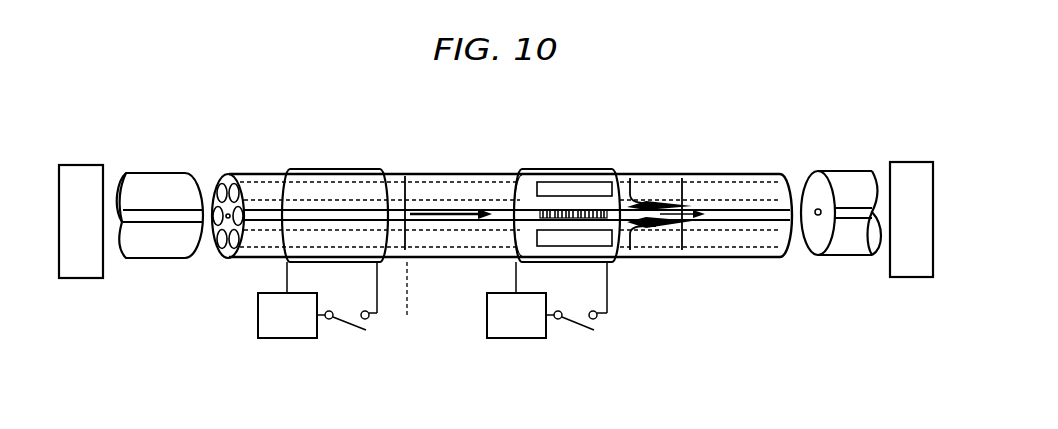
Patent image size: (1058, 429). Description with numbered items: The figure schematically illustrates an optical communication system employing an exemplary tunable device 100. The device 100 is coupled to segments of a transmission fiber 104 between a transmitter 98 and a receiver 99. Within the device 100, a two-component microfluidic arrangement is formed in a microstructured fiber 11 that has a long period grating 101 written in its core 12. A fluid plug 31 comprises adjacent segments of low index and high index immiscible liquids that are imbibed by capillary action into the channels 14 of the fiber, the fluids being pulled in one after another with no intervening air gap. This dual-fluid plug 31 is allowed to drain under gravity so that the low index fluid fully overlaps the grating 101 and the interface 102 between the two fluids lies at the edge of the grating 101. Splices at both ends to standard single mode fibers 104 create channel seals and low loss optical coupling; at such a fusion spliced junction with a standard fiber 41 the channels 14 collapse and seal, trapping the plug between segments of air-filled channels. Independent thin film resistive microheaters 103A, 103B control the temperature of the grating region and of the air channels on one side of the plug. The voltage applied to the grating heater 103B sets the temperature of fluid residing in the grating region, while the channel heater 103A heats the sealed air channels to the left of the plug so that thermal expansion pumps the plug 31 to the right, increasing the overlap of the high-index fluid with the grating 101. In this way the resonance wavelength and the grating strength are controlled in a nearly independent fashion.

The transmitter 98 is at (77, 165).
The receiver 99 is at (910, 162).
The tunable device 100 is at (296, 120).
The transmission fiber 104 is at (150, 173).
The standard fiber 41 is at (208, 257).
The channels 14 is at (437, 255).
The channel heater 103A is at (354, 170).
The grating heater 103B is at (522, 172).
The interface 102 is at (507, 258).
The fluid plug 31 is at (549, 182).
The long period grating 101 is at (582, 210).
The microstructured fiber 11 is at (683, 174).
The core 12 is at (748, 208).